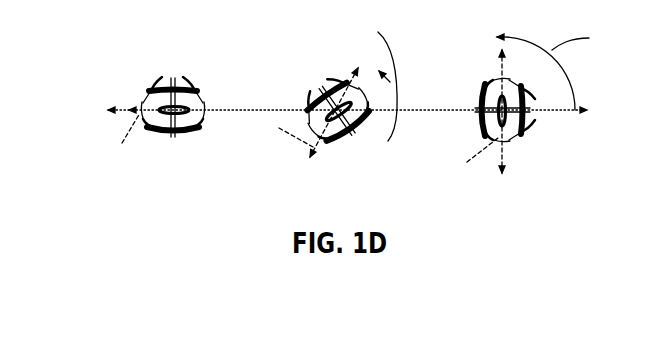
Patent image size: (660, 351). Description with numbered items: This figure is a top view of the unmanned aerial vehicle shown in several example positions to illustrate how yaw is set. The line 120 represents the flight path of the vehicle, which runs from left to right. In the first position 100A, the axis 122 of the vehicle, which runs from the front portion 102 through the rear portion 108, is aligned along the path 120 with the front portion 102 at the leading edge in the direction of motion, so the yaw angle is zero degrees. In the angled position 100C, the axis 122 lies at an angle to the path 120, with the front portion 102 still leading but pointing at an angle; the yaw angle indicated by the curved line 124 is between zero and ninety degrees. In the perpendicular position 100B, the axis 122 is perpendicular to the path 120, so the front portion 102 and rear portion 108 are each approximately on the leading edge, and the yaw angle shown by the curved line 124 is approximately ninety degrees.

The first UAV position 100A is at (173, 137).
The perpendicular UAV position 100B is at (532, 111).
The angled UAV position 100C is at (367, 125).
The front portion 102 is at (204, 97).
The rear portion 108 is at (143, 92).
The flight path line 120 is at (119, 108).
The axis 122 is at (304, 113).
The curved yaw-angle line 124 is at (494, 73).